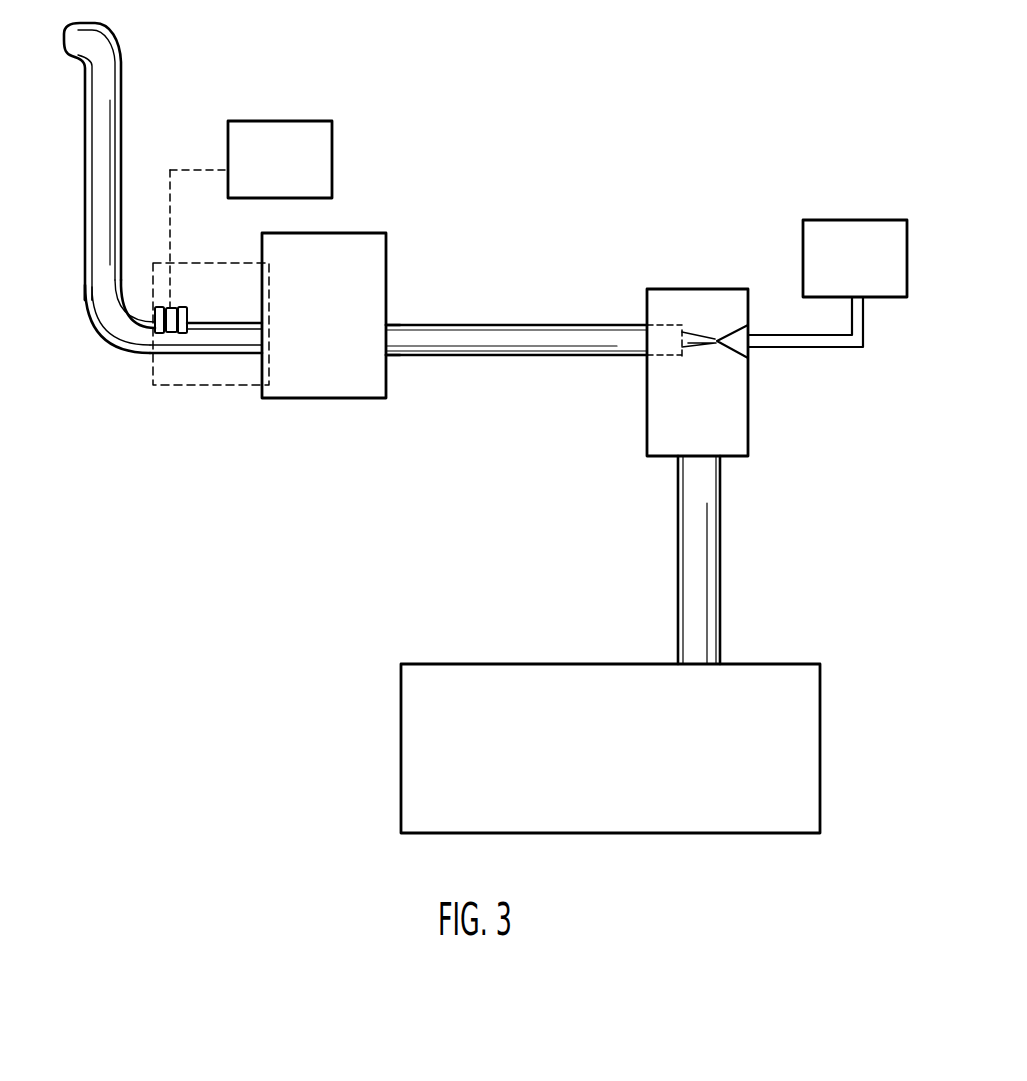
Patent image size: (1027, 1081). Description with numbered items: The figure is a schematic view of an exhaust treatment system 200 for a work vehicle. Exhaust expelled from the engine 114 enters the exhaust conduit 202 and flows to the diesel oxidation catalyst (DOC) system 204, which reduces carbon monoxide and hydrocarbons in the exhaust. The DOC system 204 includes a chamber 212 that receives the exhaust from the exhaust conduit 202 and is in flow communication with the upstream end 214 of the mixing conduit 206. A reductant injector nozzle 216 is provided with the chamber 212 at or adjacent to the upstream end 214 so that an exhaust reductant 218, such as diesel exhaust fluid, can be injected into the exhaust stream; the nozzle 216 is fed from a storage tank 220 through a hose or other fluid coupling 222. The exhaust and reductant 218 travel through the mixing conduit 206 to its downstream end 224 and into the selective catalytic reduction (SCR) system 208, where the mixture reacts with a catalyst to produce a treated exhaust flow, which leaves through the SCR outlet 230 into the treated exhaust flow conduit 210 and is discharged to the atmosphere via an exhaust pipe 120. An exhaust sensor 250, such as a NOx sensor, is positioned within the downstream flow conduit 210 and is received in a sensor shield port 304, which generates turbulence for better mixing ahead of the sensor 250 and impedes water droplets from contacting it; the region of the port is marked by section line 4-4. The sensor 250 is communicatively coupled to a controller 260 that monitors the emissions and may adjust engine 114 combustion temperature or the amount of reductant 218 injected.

The exhaust pipe 120 is at (87, 137).
The sensor shield port 304 is at (152, 312).
The exhaust sensor 250 is at (172, 307).
The controller 260 is at (261, 171).
The selective catalytic reduction (SCR) system 208 is at (306, 334).
The treated exhaust flow conduit 210 is at (160, 365).
The SCR outlet 230 is at (262, 340).
The section line 4-4 is at (223, 385).
The mixing conduit 206 is at (497, 325).
The downstream end 224 is at (387, 340).
The chamber 212 is at (648, 423).
The upstream end 214 is at (668, 325).
The reductant injector nozzle 216 is at (745, 327).
The exhaust reductant 218 is at (702, 350).
The storage tank 220 is at (837, 276).
The fluid coupling 222 is at (847, 343).
The exhaust conduit 202 is at (722, 563).
The engine 114 is at (589, 768).
The exhaust treatment system 200 is at (762, 192).
The diesel oxidation catalyst (DOC) system 204 is at (836, 446).